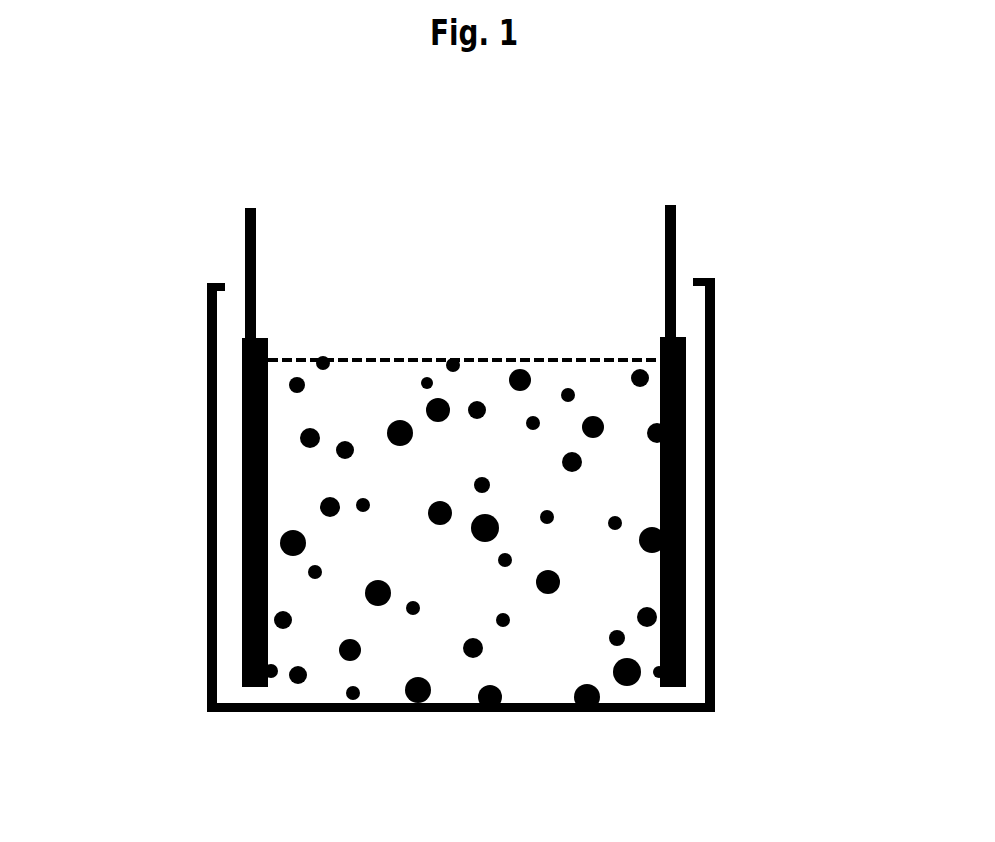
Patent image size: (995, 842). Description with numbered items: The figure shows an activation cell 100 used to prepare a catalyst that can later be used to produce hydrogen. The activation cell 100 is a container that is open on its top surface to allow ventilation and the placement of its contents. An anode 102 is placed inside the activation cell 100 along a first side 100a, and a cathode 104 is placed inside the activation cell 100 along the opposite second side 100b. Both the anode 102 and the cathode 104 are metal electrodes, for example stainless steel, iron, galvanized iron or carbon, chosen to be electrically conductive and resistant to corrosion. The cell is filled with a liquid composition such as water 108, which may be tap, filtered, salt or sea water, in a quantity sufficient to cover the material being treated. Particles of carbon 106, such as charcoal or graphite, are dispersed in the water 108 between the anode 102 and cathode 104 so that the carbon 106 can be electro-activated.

The activation cell 100 is at (444, 471).
The first side 100a is at (208, 543).
The second side 100b is at (713, 535).
The anode 102 is at (260, 338).
The cathode 104 is at (662, 337).
The carbon 106 is at (568, 395).
The water 108 is at (490, 358).